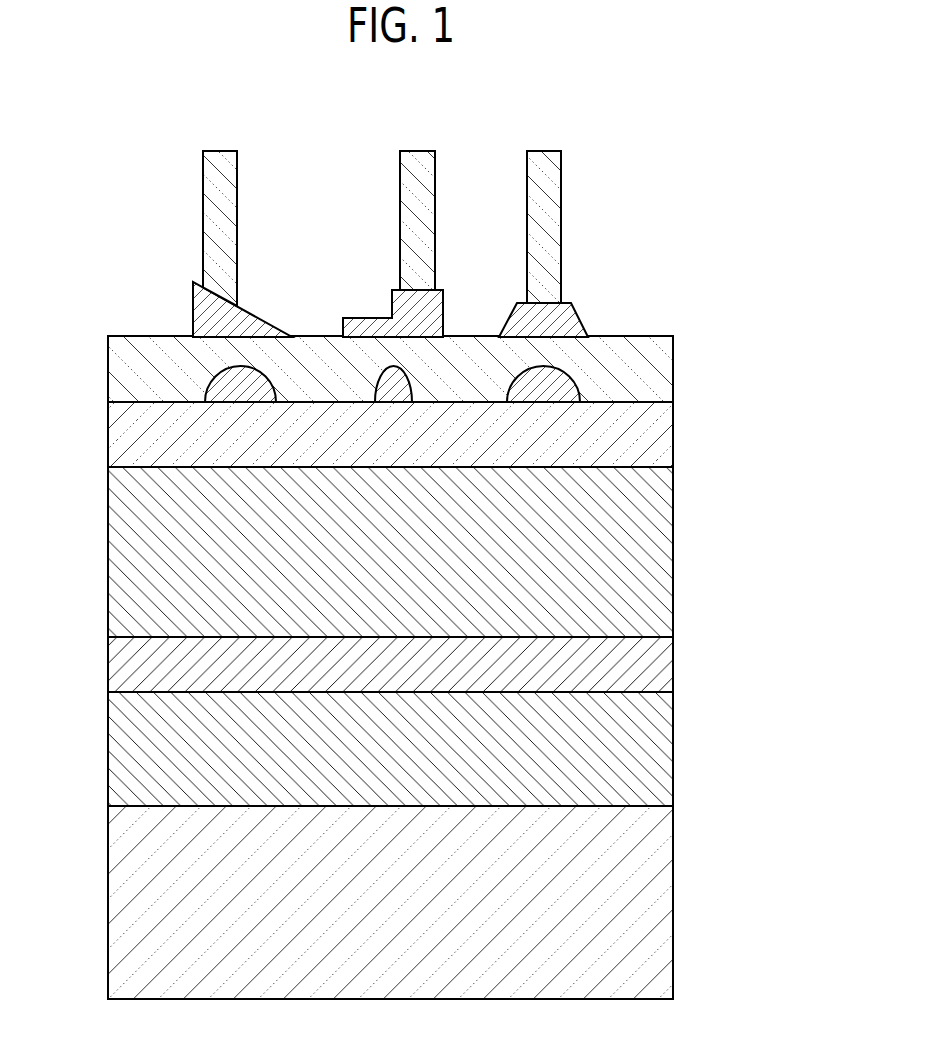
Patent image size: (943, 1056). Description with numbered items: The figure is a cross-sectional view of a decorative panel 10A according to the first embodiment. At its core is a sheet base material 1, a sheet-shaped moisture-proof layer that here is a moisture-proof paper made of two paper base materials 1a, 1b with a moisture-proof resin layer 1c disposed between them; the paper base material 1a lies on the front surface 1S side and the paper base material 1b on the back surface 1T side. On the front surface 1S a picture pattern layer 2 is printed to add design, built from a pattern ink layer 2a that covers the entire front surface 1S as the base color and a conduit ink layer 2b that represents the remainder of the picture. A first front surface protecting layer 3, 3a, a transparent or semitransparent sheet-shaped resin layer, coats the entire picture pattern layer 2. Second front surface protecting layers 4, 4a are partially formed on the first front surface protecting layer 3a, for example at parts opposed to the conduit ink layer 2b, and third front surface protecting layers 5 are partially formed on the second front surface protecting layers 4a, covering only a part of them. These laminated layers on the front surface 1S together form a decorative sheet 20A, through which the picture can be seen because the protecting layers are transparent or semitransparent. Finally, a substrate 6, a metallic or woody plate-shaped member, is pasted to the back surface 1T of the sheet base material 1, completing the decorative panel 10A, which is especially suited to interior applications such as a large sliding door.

The decorative panel 10A is at (113, 197).
The decorative sheet 20A is at (770, 188).
The sheet base material 1 is at (732, 557).
The paper base material 1a is at (668, 578).
The paper base material 1b is at (668, 745).
The moisture-proof resin layer 1c is at (668, 660).
The front surface 1S is at (128, 468).
The back surface 1T is at (126, 806).
The picture pattern layer 2 is at (732, 360).
The pattern ink layer 2a is at (668, 442).
The conduit ink layer 2b is at (567, 383).
The first front surface protecting layer 3 is at (732, 307).
The first front surface protecting layer 3a is at (668, 353).
The second front surface protecting layers 4 is at (732, 258).
The second front surface protecting layer 4a is at (253, 318).
The third front surface protecting layer 5 is at (232, 213).
The substrate 6 is at (668, 890).